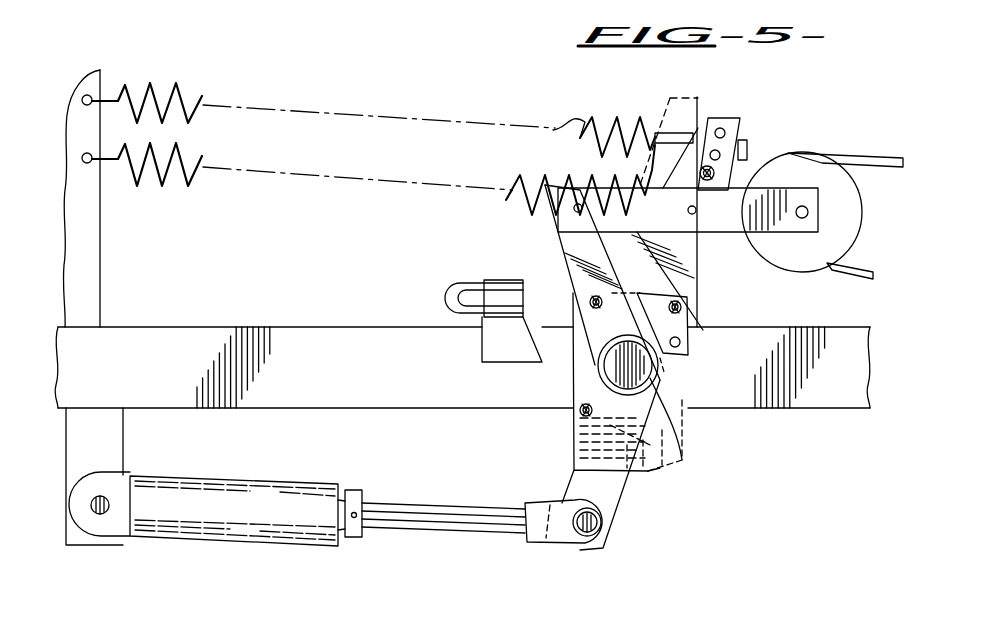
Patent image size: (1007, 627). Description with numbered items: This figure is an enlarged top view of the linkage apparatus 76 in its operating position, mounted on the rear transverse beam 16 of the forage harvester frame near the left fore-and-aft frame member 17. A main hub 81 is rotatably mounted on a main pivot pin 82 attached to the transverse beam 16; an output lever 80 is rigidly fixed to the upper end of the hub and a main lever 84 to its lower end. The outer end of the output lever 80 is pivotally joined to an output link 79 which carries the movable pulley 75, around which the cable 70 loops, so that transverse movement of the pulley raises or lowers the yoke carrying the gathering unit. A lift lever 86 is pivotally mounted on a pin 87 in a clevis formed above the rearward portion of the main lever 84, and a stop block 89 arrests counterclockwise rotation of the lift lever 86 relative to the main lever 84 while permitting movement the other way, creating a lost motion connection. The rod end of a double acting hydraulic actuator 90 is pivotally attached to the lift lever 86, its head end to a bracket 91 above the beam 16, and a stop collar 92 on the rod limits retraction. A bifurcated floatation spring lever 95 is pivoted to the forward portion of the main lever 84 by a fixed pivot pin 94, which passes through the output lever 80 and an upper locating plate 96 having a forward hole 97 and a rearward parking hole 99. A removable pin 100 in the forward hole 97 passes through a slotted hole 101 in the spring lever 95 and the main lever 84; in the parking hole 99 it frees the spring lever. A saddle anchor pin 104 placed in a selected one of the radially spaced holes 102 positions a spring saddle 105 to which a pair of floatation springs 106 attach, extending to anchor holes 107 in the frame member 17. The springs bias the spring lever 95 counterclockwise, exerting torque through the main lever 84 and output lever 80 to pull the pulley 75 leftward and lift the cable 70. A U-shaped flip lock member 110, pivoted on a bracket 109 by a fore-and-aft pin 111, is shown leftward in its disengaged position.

The rear transverse beam 16 is at (468, 410).
The fore-and-aft frame member 17 is at (108, 283).
The cable 70 is at (872, 162).
The movable pulley 75 is at (855, 244).
The linkage apparatus 76 is at (455, 227).
The output link 79 is at (606, 172).
The output lever 80 is at (545, 230).
The main hub 81 is at (677, 440).
The main pivot pin 82 is at (655, 392).
The main lever 84 is at (573, 370).
The lift lever 86 is at (563, 495).
The pin 87 is at (578, 413).
The stop block 89 is at (635, 480).
The double acting hydraulic actuator 90 is at (252, 478).
The bracket 91 is at (124, 432).
The stop collar 92 is at (355, 490).
The fixed pivot pin 94 is at (592, 300).
The floatation spring lever 95 is at (728, 238).
The upper locating plate 96 is at (665, 368).
The forward hole 97 is at (684, 315).
The parking hole 99 is at (682, 345).
The removable pin 100 is at (688, 307).
The slotted hole 101 is at (662, 300).
The radially spaced holes 102 is at (718, 120).
The saddle anchor pin 104 is at (742, 150).
The spring saddle 105 is at (718, 172).
The floatation springs 106 is at (556, 140).
The anchor holes 107 is at (100, 204).
The bracket 109 is at (482, 338).
The flip lock member 110 is at (452, 297).
The pin 111 is at (490, 280).